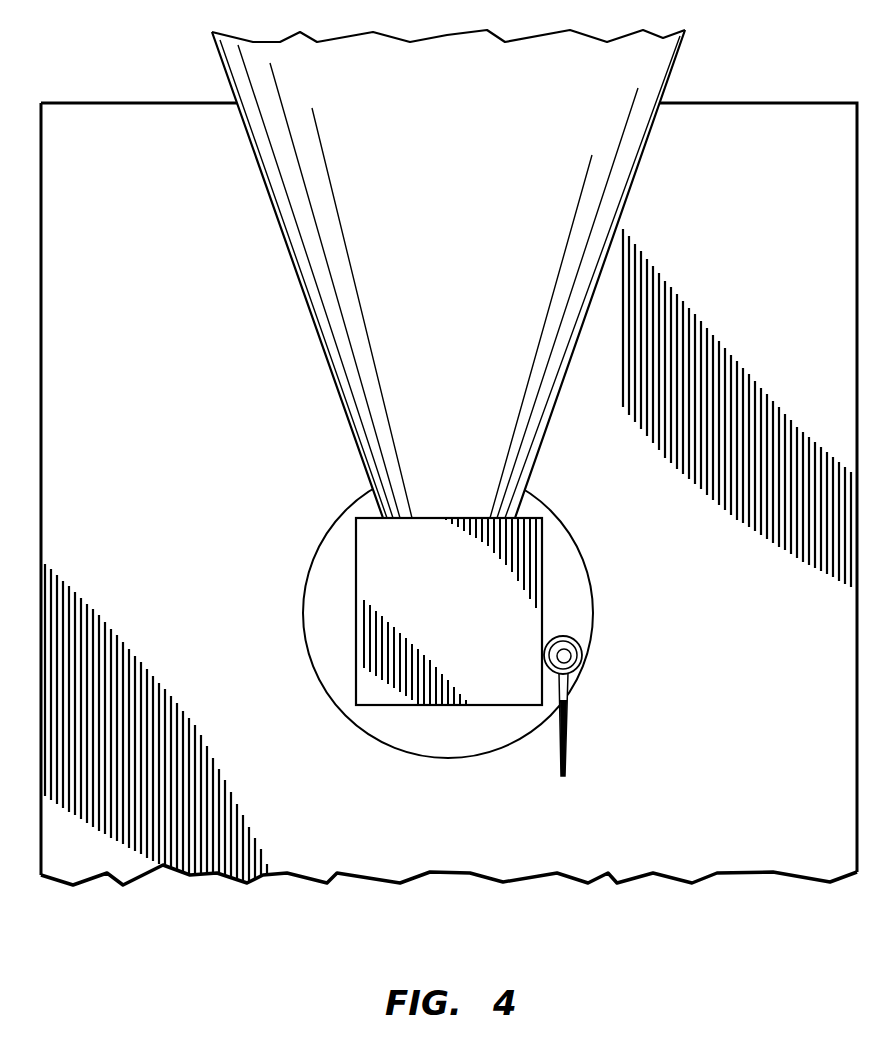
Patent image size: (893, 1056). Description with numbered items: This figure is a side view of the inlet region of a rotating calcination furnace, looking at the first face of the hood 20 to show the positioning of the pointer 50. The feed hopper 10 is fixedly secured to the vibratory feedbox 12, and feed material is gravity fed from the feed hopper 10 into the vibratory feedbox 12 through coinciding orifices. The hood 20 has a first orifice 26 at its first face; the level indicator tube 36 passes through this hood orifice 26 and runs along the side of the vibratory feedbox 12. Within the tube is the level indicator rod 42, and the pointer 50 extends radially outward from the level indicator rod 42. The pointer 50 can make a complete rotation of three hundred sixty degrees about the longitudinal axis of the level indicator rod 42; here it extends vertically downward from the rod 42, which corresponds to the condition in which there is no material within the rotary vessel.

The feed hopper 10 is at (288, 253).
The vibratory feedbox 12 is at (356, 637).
The hood 20 is at (760, 122).
The first orifice 26 is at (337, 540).
The level indicator tube 36 is at (552, 641).
The level indicator rod 42 is at (572, 655).
The pointer 50 is at (566, 716).